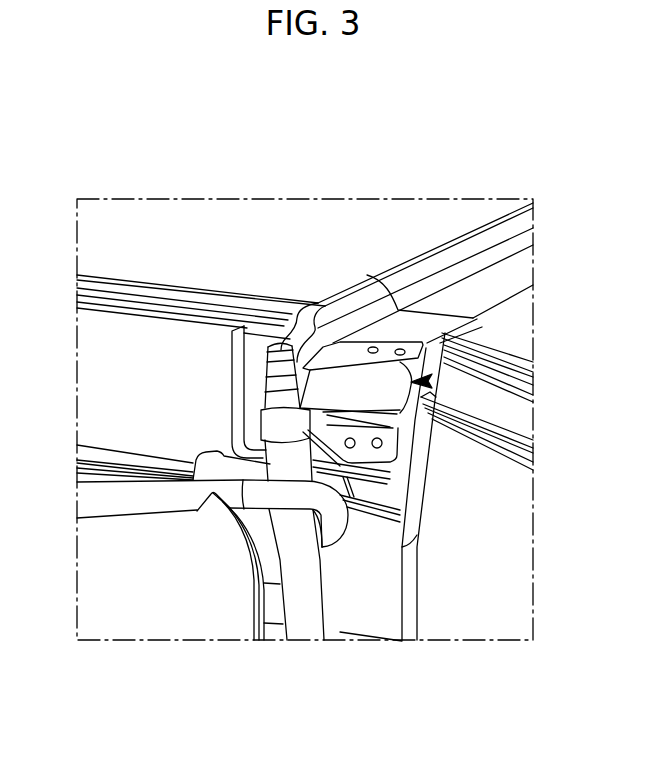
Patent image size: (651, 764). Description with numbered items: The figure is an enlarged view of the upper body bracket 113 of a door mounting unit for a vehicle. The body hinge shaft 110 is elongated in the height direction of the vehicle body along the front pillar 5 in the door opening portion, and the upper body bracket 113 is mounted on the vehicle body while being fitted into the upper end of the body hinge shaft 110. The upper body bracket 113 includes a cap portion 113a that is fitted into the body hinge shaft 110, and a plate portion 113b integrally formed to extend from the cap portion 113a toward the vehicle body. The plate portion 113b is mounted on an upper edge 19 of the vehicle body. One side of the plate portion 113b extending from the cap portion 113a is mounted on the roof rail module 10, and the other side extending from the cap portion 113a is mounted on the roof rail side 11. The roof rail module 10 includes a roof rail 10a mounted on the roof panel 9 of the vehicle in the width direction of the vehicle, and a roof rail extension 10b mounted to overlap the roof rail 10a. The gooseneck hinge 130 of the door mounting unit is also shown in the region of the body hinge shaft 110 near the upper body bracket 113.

The front pillar 5 is at (367, 600).
The roof panel 9 is at (90, 232).
The roof rail module 10 is at (407, 291).
The roof rail 10a is at (478, 287).
The roof rail extension 10b is at (360, 305).
The roof rail side 11 is at (95, 382).
The upper edge 19 is at (432, 381).
The body hinge shaft 110 is at (305, 625).
The upper body bracket 113 is at (320, 289).
The cap portion 113a is at (263, 378).
The plate portion 113b is at (328, 390).
The gooseneck hinge 130 is at (135, 505).